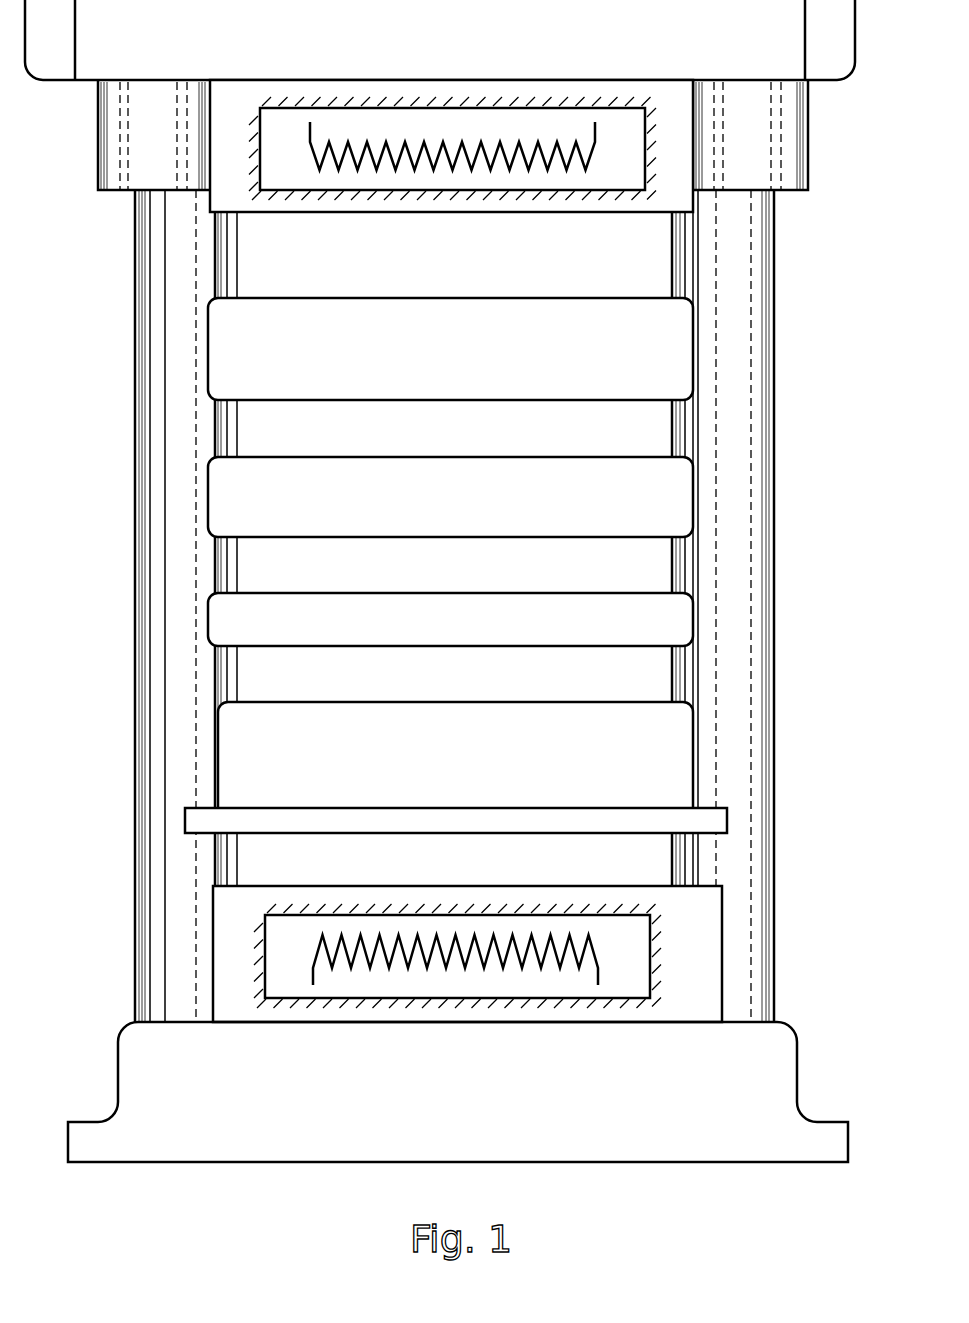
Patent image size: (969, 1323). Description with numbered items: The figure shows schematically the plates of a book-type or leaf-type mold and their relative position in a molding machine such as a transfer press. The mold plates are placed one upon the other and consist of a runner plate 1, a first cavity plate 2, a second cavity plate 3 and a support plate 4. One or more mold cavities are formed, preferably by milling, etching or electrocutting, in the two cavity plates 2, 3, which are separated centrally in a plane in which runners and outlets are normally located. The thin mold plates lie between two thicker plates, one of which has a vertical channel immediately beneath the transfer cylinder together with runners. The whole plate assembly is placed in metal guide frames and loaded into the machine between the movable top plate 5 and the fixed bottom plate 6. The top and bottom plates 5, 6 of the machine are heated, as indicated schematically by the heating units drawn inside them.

The runner plate 1 is at (602, 362).
The first cavity plate 2 is at (602, 507).
The second cavity plate 3 is at (602, 633).
The support plate 4 is at (602, 767).
The movable top plate 5 is at (449, 163).
The fixed bottom plate 6 is at (451, 954).